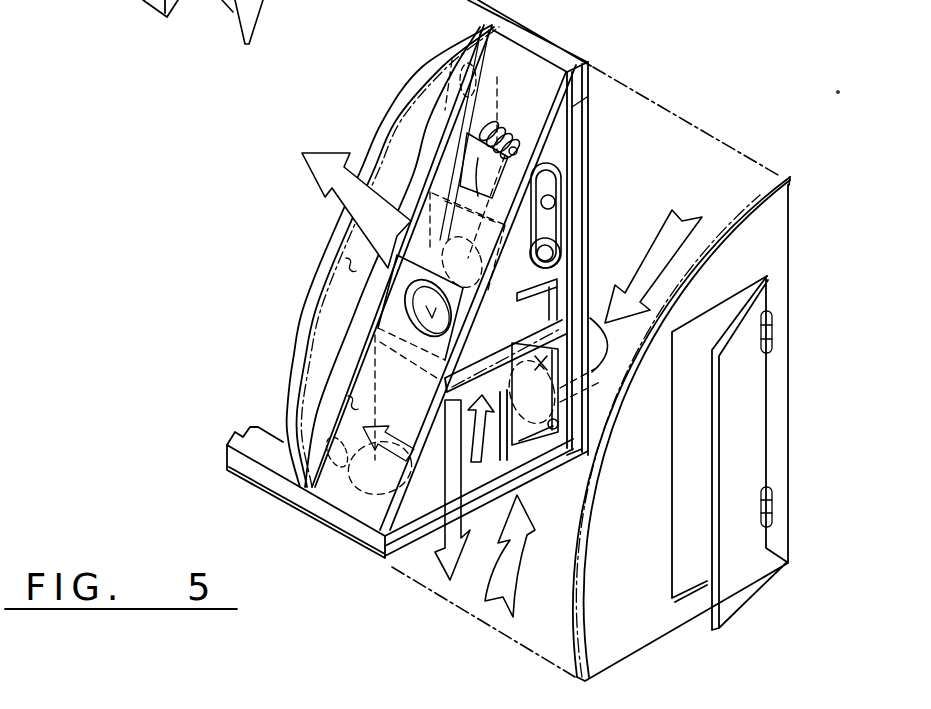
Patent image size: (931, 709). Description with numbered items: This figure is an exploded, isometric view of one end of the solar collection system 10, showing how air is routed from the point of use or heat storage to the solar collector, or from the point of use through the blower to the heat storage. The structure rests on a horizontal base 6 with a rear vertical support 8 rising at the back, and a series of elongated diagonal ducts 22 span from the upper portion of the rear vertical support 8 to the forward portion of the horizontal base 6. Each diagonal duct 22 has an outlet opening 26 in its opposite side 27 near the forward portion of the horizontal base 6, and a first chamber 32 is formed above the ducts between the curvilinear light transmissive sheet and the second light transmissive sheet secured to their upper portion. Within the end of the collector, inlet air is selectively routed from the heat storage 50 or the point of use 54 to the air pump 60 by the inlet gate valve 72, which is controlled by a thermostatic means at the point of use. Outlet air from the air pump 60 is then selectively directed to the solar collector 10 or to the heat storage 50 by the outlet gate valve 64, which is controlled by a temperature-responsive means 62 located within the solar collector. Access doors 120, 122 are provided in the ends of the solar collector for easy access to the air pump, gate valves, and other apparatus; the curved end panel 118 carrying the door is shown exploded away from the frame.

The horizontal base 6 is at (411, 548).
The rear vertical support 8 is at (588, 127).
The solar collection system 10 is at (271, 323).
The elongated diagonal duct 22 is at (417, 160).
The outlet opening 26 is at (337, 470).
The opposite side 27 is at (349, 400).
The first chamber 32 is at (347, 260).
The heat storage 50 is at (221, 20).
The point of use 54 is at (662, 225).
The air pump 60 is at (553, 248).
The temperature-responsive means 62 is at (486, 124).
The outlet gate valve 64 is at (430, 317).
The inlet gate valve 72 is at (558, 402).
The curved housing panel 118 is at (643, 623).
The access door 120 is at (93, 8).
The access door 122 is at (743, 557).